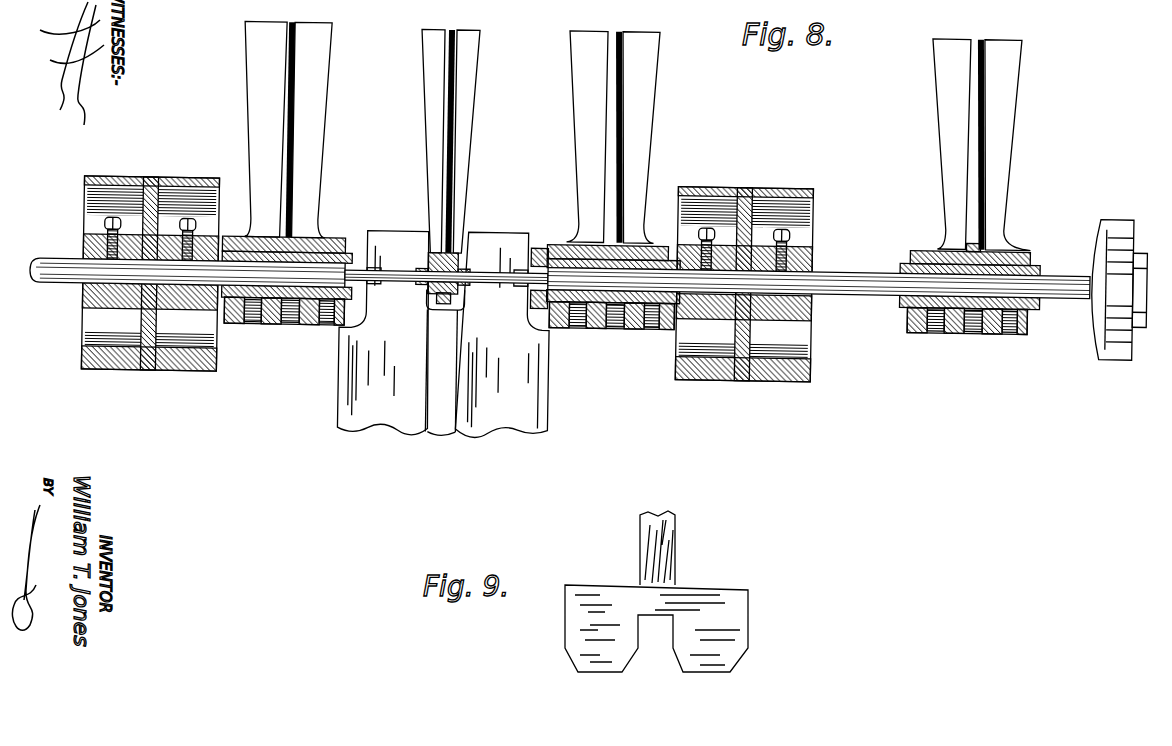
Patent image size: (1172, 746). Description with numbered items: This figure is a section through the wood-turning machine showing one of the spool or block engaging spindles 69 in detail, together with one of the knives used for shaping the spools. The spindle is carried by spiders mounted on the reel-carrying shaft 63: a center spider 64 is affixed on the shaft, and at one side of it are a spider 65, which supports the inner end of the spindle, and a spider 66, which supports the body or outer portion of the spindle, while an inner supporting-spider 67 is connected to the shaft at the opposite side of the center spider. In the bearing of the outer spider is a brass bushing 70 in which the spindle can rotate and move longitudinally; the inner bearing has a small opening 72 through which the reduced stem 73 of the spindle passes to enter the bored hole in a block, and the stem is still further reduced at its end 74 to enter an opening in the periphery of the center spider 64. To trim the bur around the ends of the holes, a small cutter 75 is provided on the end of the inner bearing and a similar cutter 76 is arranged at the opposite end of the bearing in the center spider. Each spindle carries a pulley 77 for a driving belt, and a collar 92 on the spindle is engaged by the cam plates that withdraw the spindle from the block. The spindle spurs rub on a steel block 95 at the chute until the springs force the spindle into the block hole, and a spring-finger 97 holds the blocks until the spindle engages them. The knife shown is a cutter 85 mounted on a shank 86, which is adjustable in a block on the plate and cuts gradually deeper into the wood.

In FIG. 8, the reel-carrying shaft 63 is at (326, 232).
In FIG. 8, the center spider 64 is at (466, 140).
In FIG. 8, the spider 65 is at (650, 98).
In FIG. 8, the spider 66 is at (1005, 136).
In FIG. 8, the inner supporting-spider 67 is at (326, 99).
In FIG. 8, the spool or block engaging spindle 69 is at (847, 268).
In FIG. 8, the brass bushing 70 is at (902, 236).
In FIG. 8, the small opening 72 is at (548, 318).
In FIG. 8, the reduced stem 73 is at (367, 228).
In FIG. 8, the further reduced end 74 is at (446, 304).
In FIG. 8, the small cutter 75 is at (545, 240).
In FIG. 8, the cutter 76 is at (423, 260).
In FIG. 8, the pulley 77 is at (150, 175).
In FIG. 9, the cutter 85 is at (749, 630).
In FIG. 9, the shank 86 is at (678, 548).
In FIG. 8, the collar 92 is at (1101, 204).
In FIG. 8, the steel block 95 is at (370, 265).
In FIG. 8, the spring-finger 97 is at (366, 304).